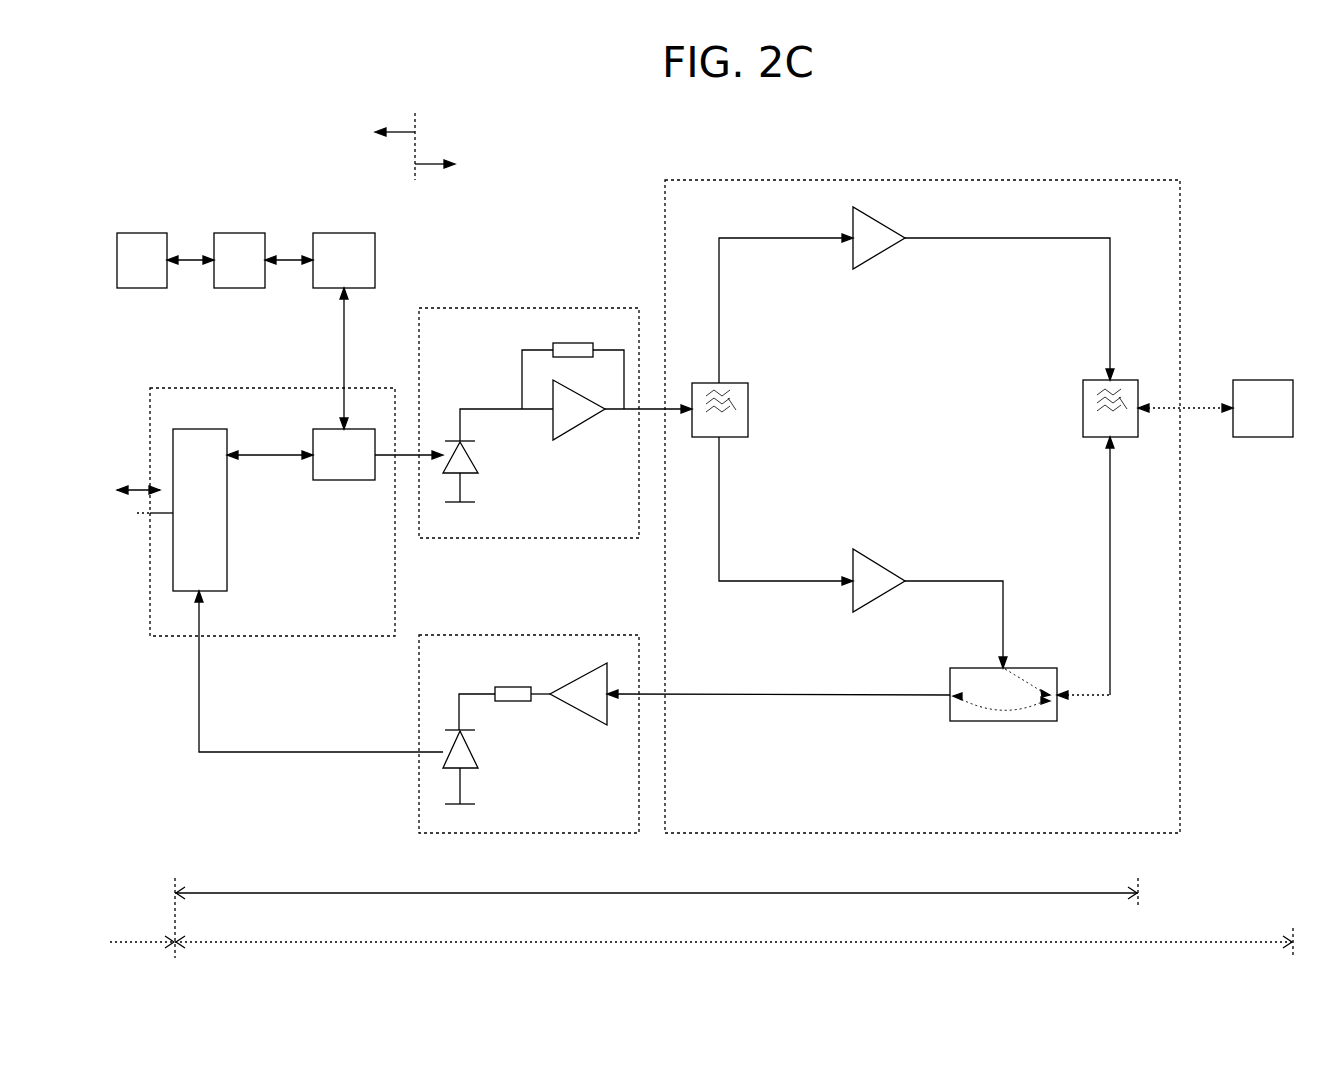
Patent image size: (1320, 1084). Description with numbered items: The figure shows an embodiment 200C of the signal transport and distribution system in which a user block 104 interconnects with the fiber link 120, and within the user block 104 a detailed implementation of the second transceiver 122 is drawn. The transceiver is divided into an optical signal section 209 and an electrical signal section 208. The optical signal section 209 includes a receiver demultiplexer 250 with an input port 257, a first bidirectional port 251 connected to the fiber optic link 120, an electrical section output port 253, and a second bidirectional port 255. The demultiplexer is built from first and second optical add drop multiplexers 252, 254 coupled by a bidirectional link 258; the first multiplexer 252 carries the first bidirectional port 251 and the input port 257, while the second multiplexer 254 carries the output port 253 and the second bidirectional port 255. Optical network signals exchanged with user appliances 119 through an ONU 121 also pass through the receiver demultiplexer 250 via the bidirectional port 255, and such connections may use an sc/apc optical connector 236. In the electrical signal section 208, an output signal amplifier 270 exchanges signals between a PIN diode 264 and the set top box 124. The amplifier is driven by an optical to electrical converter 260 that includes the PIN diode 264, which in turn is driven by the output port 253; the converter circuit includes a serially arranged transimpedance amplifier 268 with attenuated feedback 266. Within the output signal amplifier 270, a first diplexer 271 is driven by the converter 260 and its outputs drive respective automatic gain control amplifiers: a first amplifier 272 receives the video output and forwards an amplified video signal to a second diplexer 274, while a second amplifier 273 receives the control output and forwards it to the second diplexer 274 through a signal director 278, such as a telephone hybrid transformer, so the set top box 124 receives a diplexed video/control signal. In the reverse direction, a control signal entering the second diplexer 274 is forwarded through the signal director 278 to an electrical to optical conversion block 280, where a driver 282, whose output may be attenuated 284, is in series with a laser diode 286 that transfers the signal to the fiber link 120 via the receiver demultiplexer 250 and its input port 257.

The signal transport and distribution system embodiment 200C is at (1152, 150).
The user appliances 119 is at (128, 292).
The ONU 121 is at (228, 281).
The sc/apc optical connector 236 is at (333, 281).
The optical signal section 209 is at (372, 146).
The electrical signal section 208 is at (455, 164).
The second bidirectional port 255 is at (338, 385).
The electrical section output port 253 is at (388, 452).
The receiver demultiplexer 250 is at (336, 617).
The first optical add drop multiplexer 252 is at (189, 577).
The second optical add drop multiplexer 254 is at (333, 478).
The bidirectional link 258 is at (270, 445).
The first bidirectional port 251 is at (137, 477).
The fiber link 120 is at (144, 735).
The input port 257 is at (207, 636).
The optical to electrical converter 260 is at (588, 525).
The PIN diode 264 is at (478, 458).
The attenuated feedback 266 is at (570, 343).
The transimpedance amplifier 268 is at (575, 432).
The output signal amplifier 270 is at (1131, 809).
The first diplexer 271 is at (709, 435).
The first automatic gain control amplifier 272 is at (870, 266).
The second automatic gain control amplifier 273 is at (875, 600).
The second diplexer 274 is at (1099, 434).
The signal director 278 is at (1003, 721).
The set top box 124 is at (1252, 427).
The electrical to optical conversion block 280 is at (593, 819).
The driver 282 is at (575, 712).
The attenuated driver output 284 is at (520, 686).
The laser diode 286 is at (478, 745).
The second transceiver 122 is at (656, 888).
The user block 104 is at (701, 937).